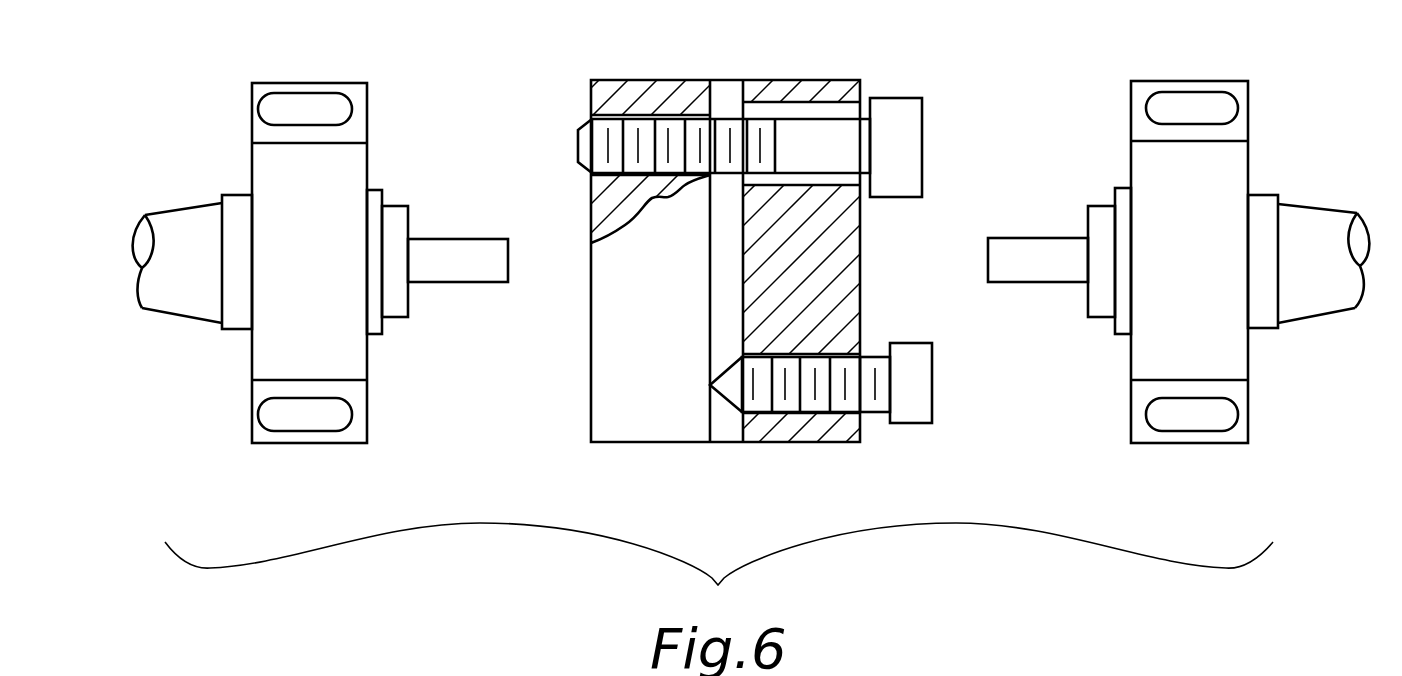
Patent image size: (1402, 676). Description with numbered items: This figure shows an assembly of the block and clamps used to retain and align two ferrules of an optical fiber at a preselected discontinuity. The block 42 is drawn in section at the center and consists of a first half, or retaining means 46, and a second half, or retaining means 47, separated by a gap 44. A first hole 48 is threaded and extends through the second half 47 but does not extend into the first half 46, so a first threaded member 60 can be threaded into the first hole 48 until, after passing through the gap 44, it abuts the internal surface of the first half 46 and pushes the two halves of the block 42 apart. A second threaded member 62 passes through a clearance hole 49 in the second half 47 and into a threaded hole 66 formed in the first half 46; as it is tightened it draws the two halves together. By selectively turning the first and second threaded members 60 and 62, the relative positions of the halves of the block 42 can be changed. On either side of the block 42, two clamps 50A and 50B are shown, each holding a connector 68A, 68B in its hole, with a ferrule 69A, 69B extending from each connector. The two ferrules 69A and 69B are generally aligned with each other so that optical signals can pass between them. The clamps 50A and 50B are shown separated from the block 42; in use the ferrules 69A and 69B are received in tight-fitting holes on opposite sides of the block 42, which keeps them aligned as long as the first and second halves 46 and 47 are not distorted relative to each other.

The block 42 is at (813, 80).
The gap 44 is at (720, 290).
The first half (retaining means) 46 is at (597, 397).
The second half (retaining means) 47 is at (827, 435).
The first hole 48 is at (740, 418).
The clearance hole 49 is at (820, 180).
The clamp 50A is at (358, 173).
The clamp 50B is at (1240, 167).
The first threaded member 60 is at (932, 377).
The second threaded member 62 is at (922, 147).
The threaded hole 66 is at (638, 110).
The connector 68A is at (374, 328).
The connector 68B is at (1120, 327).
The ferrule 69A is at (447, 240).
The ferrule 69B is at (1020, 238).